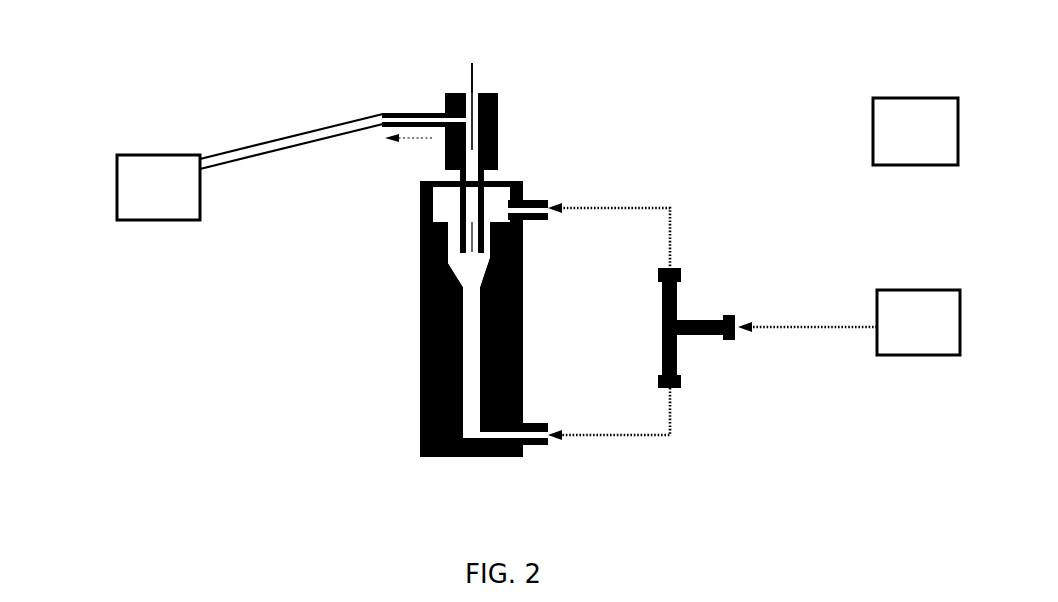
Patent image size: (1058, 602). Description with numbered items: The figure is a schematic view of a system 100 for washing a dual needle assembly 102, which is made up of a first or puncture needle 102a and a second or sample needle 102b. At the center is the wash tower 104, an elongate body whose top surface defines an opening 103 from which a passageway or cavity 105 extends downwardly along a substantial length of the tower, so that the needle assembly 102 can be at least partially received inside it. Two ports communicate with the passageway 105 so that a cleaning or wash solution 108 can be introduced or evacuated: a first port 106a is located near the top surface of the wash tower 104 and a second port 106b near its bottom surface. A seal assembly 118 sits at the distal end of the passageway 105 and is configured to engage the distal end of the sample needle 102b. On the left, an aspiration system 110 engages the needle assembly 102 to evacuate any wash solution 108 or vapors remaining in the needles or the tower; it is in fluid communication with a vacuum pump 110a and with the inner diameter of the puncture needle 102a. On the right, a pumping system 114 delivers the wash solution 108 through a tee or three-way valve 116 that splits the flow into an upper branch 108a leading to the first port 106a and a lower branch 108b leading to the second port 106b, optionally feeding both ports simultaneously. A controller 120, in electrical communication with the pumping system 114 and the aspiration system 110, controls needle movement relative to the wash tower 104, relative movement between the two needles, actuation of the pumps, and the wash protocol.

The system for washing a dual needle assembly 100 is at (501, 269).
The dual needle assembly 102 is at (502, 66).
The puncture needle 102a is at (447, 204).
The sample needle 102b is at (455, 82).
The opening 103 is at (508, 175).
The wash tower 104 is at (410, 371).
The passageway 105 is at (458, 285).
The first port 106a is at (549, 192).
The second port 106b is at (554, 452).
The wash solution 108 is at (791, 317).
The gas supply line upper branch 108a is at (678, 202).
The gas supply line lower branch 108b is at (680, 444).
The aspiration system 110 is at (505, 119).
The vacuum pump 110a is at (281, 166).
The pumping system 114 is at (918, 322).
The three-way valve 116 is at (688, 294).
The seal assembly 118 is at (462, 439).
The controller 120 is at (915, 131).